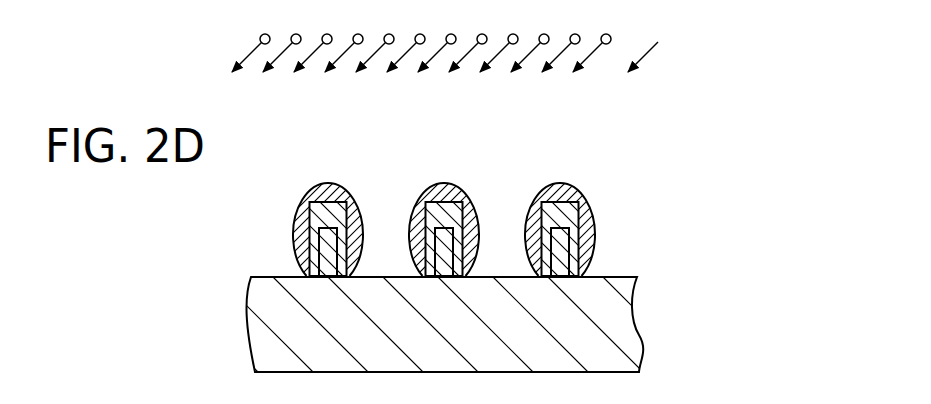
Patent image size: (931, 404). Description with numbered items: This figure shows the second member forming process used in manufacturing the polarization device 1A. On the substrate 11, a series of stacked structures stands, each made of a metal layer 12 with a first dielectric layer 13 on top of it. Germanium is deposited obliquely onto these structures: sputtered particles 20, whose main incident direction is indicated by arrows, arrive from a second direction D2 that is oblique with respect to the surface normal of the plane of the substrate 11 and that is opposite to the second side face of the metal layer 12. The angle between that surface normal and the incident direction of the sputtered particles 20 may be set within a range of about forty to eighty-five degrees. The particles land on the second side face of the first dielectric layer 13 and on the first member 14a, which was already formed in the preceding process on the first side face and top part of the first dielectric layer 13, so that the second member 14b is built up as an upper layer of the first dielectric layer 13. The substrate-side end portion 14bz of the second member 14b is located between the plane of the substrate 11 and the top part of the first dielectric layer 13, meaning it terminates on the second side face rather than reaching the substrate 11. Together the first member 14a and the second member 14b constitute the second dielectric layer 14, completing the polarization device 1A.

The sputtered particle 20 is at (258, 38).
The second direction D2 is at (652, 43).
The polarization device 1A is at (648, 147).
The substrate 11 is at (625, 332).
The metal layer 12 is at (565, 237).
The first dielectric layer 13 is at (573, 213).
The second dielectric layer 14 is at (505, 127).
The first member 14a is at (438, 183).
The second member 14b is at (462, 183).
The end portion 14bz is at (580, 272).